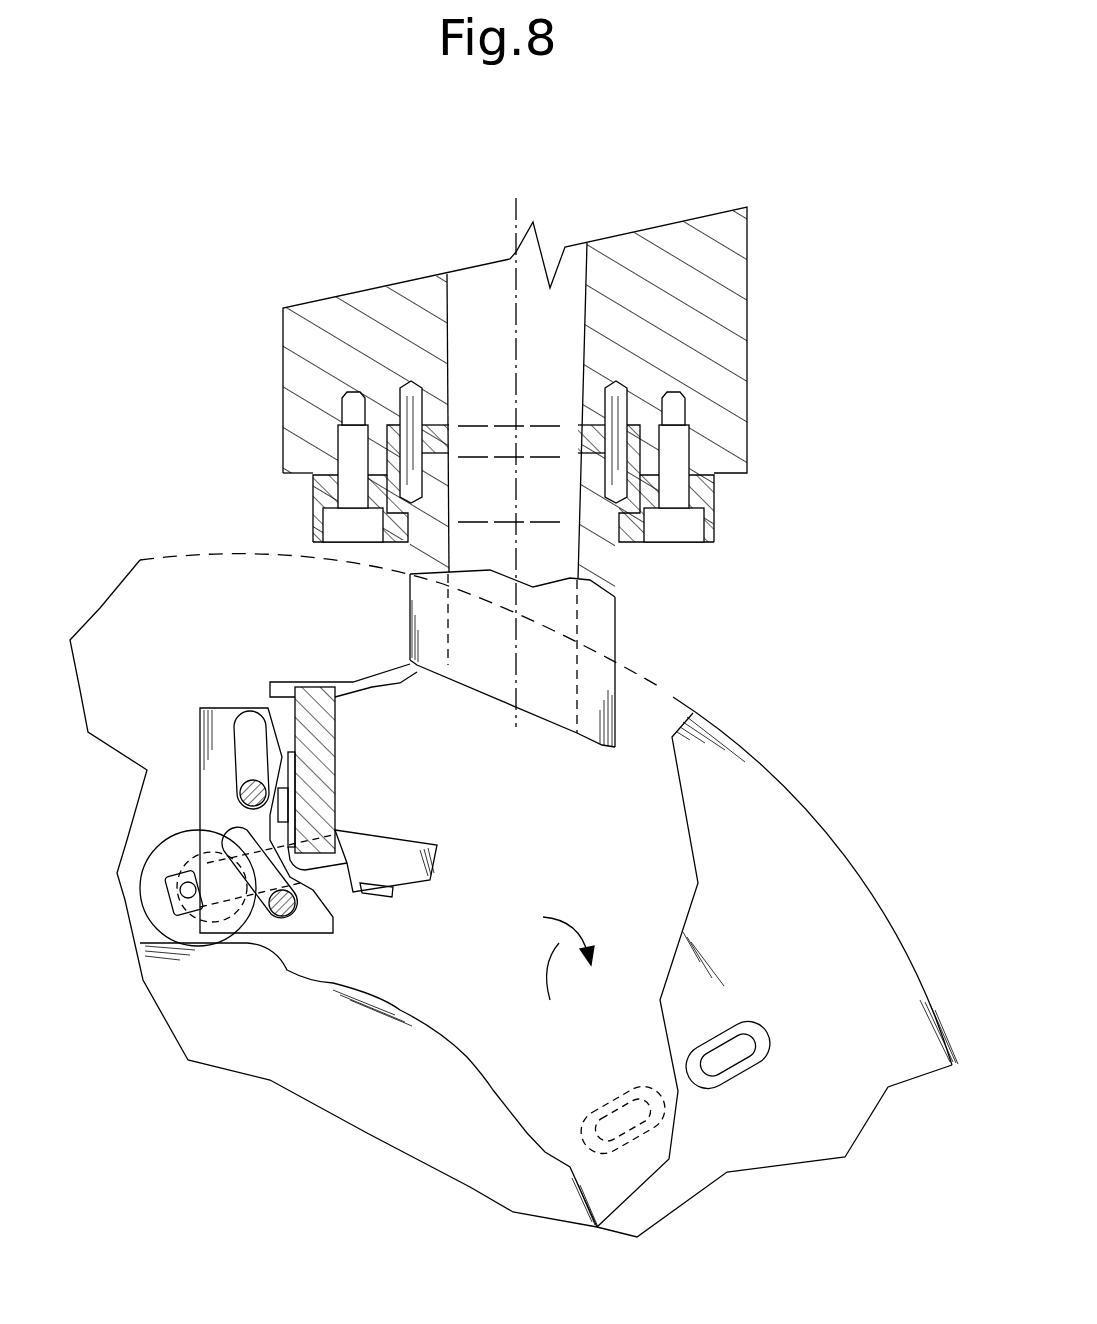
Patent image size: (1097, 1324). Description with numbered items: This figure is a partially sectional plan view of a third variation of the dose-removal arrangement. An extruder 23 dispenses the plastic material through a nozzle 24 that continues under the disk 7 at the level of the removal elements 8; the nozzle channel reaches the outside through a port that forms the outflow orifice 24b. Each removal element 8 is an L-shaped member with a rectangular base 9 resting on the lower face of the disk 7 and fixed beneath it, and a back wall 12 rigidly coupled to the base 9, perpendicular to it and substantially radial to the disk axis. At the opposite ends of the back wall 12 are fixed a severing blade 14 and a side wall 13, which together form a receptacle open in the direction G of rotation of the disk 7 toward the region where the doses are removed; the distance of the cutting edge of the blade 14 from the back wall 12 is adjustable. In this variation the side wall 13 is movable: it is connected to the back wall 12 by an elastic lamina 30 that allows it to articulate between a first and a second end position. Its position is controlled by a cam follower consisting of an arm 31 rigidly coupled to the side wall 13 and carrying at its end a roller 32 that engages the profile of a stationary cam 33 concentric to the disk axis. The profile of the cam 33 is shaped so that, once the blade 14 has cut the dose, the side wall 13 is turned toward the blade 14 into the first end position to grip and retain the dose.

The disk 7 is at (798, 886).
The removal element 8 is at (275, 788).
The rectangular base 9 is at (232, 718).
The back wall 12 is at (313, 763).
The side wall 13 is at (420, 841).
The severing or cutting element (blade) 14 is at (355, 682).
The extruder 23 is at (715, 310).
The nozzle 24 is at (546, 497).
The outflow orifice 24b is at (533, 717).
The elastic lamina 30 is at (353, 887).
The arm 31 is at (175, 884).
The roller 32 is at (152, 916).
The stationary cam 33 is at (372, 1068).
The direction of rotation G is at (568, 975).